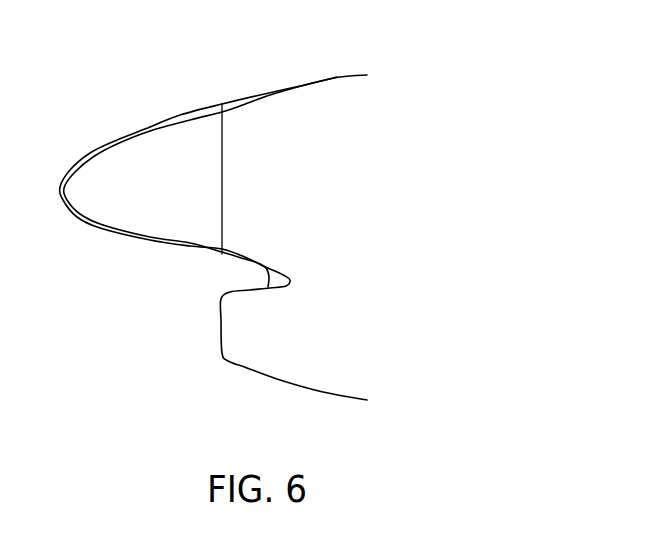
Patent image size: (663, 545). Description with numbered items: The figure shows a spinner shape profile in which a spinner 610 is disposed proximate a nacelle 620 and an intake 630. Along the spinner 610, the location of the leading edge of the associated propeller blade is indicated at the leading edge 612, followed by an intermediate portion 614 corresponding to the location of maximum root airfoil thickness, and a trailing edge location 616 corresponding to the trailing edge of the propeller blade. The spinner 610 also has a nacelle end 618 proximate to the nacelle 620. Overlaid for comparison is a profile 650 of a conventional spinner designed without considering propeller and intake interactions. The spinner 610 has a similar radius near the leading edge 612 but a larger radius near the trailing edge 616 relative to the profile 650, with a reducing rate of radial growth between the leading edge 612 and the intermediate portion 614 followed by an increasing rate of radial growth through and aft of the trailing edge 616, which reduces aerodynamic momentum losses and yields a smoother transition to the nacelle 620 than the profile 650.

The spinner 610 is at (102, 170).
The leading edge location 612 is at (122, 130).
The intermediate portion 614 is at (150, 126).
The trailing edge location 616 is at (183, 113).
The nacelle end 618 is at (205, 110).
The nacelle 620 is at (270, 88).
The intake 630 is at (200, 333).
The profile 650 is at (302, 90).